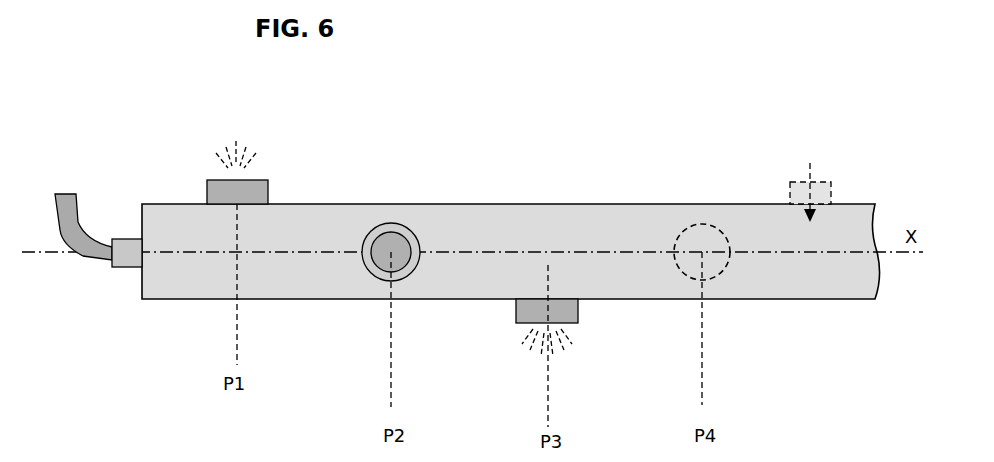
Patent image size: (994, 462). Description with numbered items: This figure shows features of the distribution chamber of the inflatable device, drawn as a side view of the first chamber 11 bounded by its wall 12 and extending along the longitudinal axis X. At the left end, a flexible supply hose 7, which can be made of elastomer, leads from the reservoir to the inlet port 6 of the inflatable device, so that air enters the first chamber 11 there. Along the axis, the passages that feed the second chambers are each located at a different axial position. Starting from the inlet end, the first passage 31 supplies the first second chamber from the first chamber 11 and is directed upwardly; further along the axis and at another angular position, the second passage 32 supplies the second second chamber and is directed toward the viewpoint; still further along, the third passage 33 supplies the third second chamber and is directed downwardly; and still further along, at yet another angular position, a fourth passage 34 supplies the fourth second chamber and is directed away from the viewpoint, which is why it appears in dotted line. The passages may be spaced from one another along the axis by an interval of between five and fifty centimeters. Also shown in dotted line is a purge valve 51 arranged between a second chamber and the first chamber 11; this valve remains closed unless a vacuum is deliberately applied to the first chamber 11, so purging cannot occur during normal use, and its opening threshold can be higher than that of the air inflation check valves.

The inlet port 6 is at (126, 258).
The supply hose 7 is at (80, 229).
The first chamber 11 is at (505, 244).
The wall of the first chamber 12 is at (578, 201).
The first passage 31 is at (258, 190).
The second passage 32 is at (387, 225).
The third passage 33 is at (537, 311).
The optional sensor position 34 is at (692, 225).
The purge valve 51 is at (815, 182).